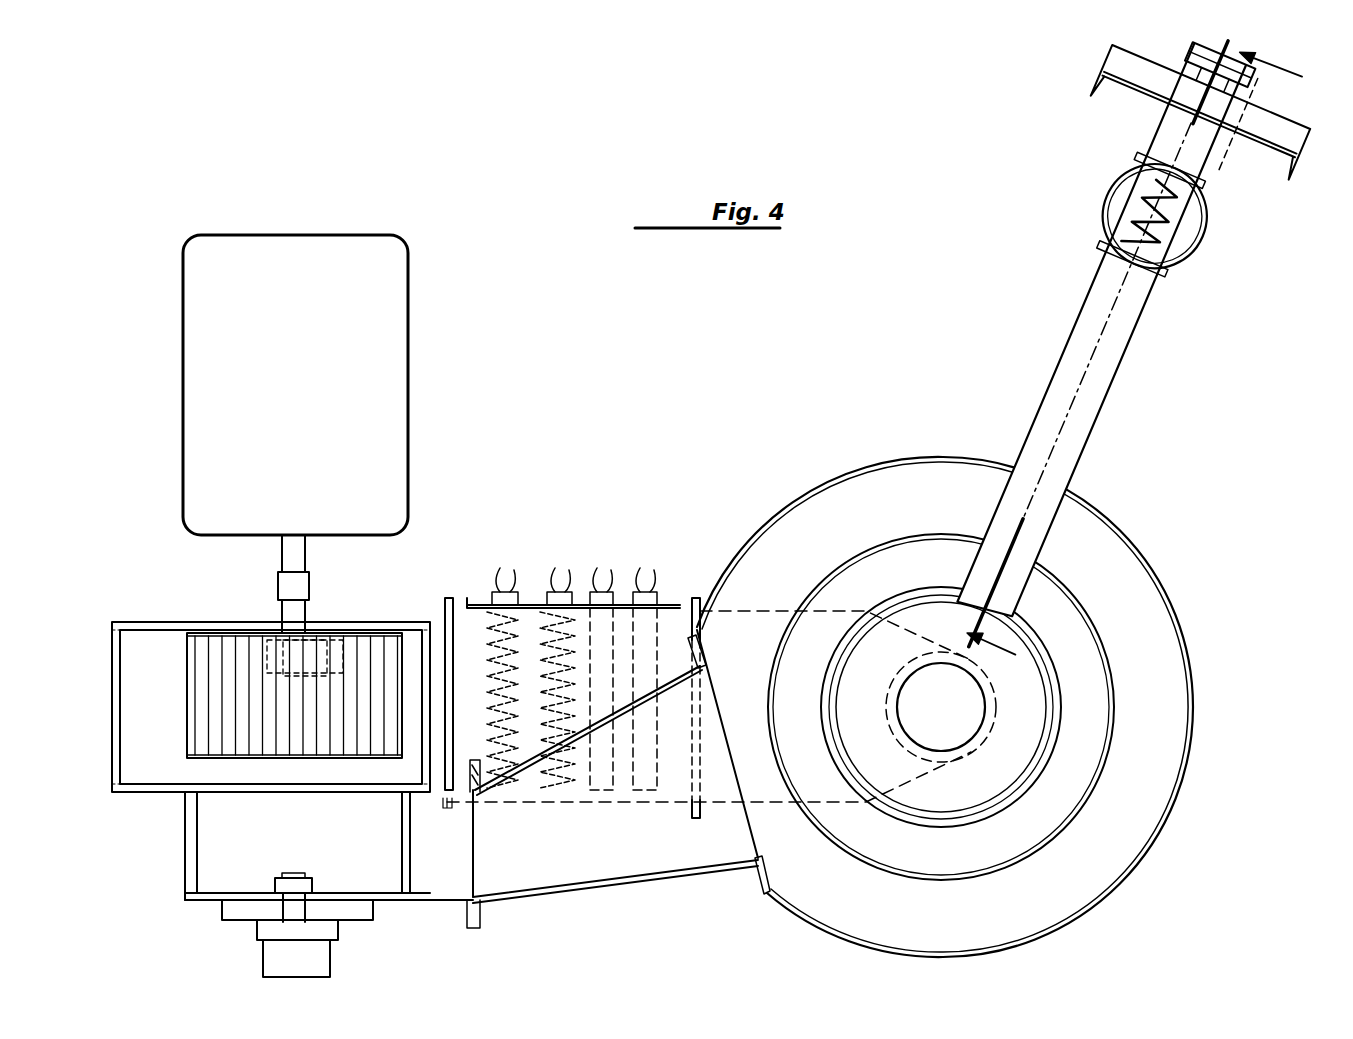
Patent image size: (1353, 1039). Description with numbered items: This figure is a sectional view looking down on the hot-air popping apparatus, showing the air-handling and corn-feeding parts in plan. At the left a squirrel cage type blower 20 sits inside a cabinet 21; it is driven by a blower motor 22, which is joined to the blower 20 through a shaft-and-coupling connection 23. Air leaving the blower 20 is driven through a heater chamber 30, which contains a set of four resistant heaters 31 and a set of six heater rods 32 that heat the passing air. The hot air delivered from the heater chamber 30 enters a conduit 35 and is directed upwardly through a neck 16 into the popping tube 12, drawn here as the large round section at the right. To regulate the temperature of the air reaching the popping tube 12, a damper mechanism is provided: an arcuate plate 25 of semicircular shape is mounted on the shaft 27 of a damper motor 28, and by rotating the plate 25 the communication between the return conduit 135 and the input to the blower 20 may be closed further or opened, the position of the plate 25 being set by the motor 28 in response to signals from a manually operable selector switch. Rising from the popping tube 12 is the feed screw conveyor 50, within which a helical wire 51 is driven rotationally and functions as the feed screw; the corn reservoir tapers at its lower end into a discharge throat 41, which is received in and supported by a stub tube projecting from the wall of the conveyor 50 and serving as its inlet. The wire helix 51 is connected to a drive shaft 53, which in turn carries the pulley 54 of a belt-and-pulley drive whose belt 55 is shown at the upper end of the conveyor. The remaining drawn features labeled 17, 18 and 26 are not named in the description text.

The popping tube 12 is at (962, 802).
The neck 16 is at (986, 712).
The inlet ring 17 is at (1040, 745).
The blower housing 18 is at (1162, 822).
The squirrel cage type blower 20 is at (353, 668).
The cabinet 21 is at (196, 622).
The blower motor 22 is at (378, 398).
The shaft-and-coupling connection 23 is at (302, 592).
The arcuate plate 25 is at (385, 826).
The chamber wall 26 is at (188, 845).
The shaft 27 is at (292, 905).
The damper motor 28 is at (313, 962).
The heater chamber 30 is at (467, 590).
The resistant heaters 31 is at (498, 670).
The heater rods 32 is at (657, 597).
The conduit 35 is at (968, 745).
The discharge throat 41 is at (1205, 247).
The feed screw conveyor 50 is at (1064, 334).
The helical wire 51 is at (1145, 215).
The drive shaft 53 is at (1150, 170).
The pulley 54 is at (1197, 47).
The belt 55 is at (1262, 78).
The return conduit 135 is at (612, 880).